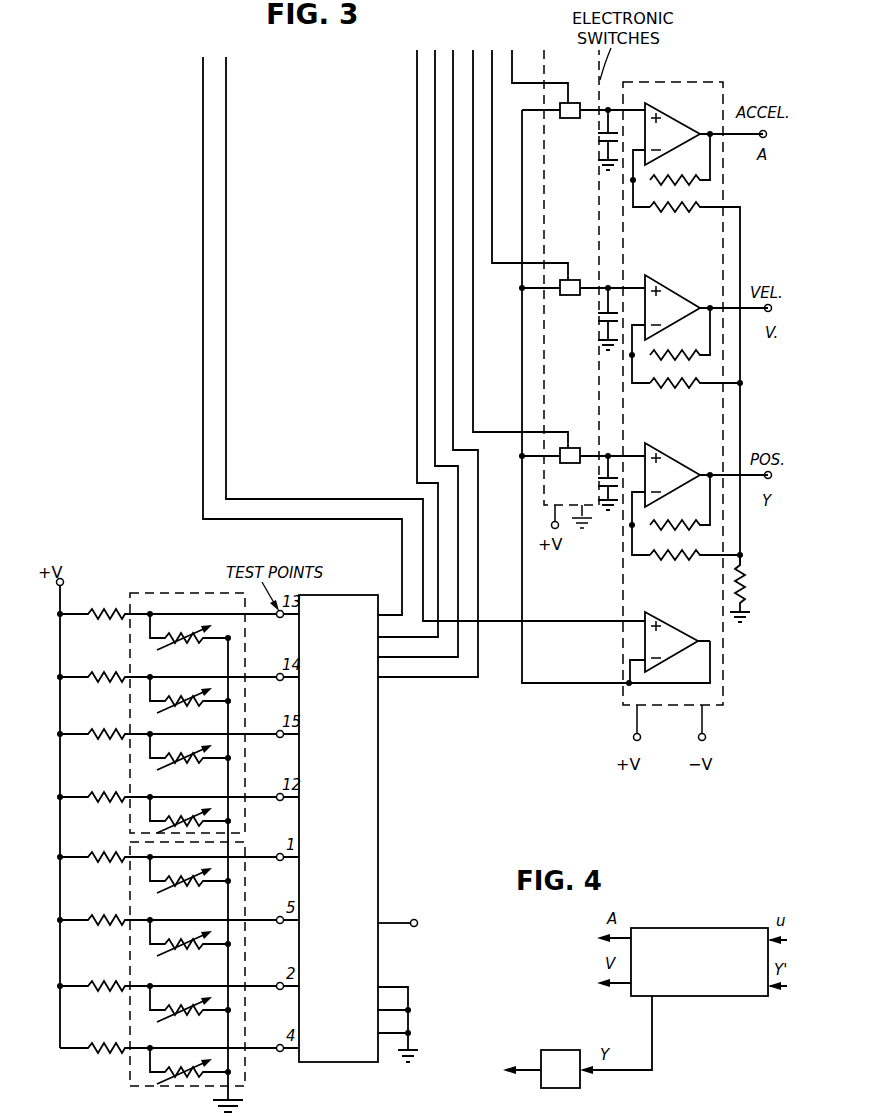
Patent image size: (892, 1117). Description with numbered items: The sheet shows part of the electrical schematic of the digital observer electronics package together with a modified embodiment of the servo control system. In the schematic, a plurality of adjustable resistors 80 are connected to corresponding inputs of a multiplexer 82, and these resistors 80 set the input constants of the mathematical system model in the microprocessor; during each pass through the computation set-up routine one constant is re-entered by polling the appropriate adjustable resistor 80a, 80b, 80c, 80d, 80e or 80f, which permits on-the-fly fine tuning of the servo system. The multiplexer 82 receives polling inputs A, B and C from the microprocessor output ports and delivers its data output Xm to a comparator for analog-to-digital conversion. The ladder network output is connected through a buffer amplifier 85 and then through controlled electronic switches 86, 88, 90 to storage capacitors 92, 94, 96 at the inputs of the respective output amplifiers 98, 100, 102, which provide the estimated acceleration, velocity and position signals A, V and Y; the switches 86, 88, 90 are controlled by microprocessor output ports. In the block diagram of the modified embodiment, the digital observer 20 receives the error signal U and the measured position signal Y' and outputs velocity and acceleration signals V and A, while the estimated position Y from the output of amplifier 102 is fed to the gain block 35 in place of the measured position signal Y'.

In FIG. 3, the adjustable resistors 80 is at (175, 587).
In FIG. 3, the adjustable resistor 80a is at (186, 633).
In FIG. 3, the adjustable resistor 80b is at (185, 695).
In FIG. 3, the adjustable resistor 80c is at (185, 752).
In FIG. 3, the adjustable resistor 80d is at (185, 815).
In FIG. 3, the adjustable resistor 80e is at (186, 884).
In FIG. 3, the adjustable resistor 80f is at (185, 947).
In FIG. 3, the multiplexer 82 is at (370, 833).
In FIG. 3, the buffer amplifier 85 is at (663, 628).
In FIG. 3, the controlled electronic switch 86 is at (570, 118).
In FIG. 3, the controlled electronic switch 88 is at (570, 295).
In FIG. 3, the controlled electronic switch 90 is at (570, 463).
In FIG. 3, the storage capacitor 92 is at (600, 145).
In FIG. 3, the storage capacitor 94 is at (600, 320).
In FIG. 3, the storage capacitor 96 is at (612, 480).
In FIG. 3, the output amplifier 98 is at (676, 126).
In FIG. 3, the output amplifier 100 is at (668, 290).
In FIG. 3, the output amplifier 102 is at (672, 470).
In FIG. 4, the digital observer 20 is at (706, 930).
In FIG. 4, the gain block 35 is at (563, 1050).